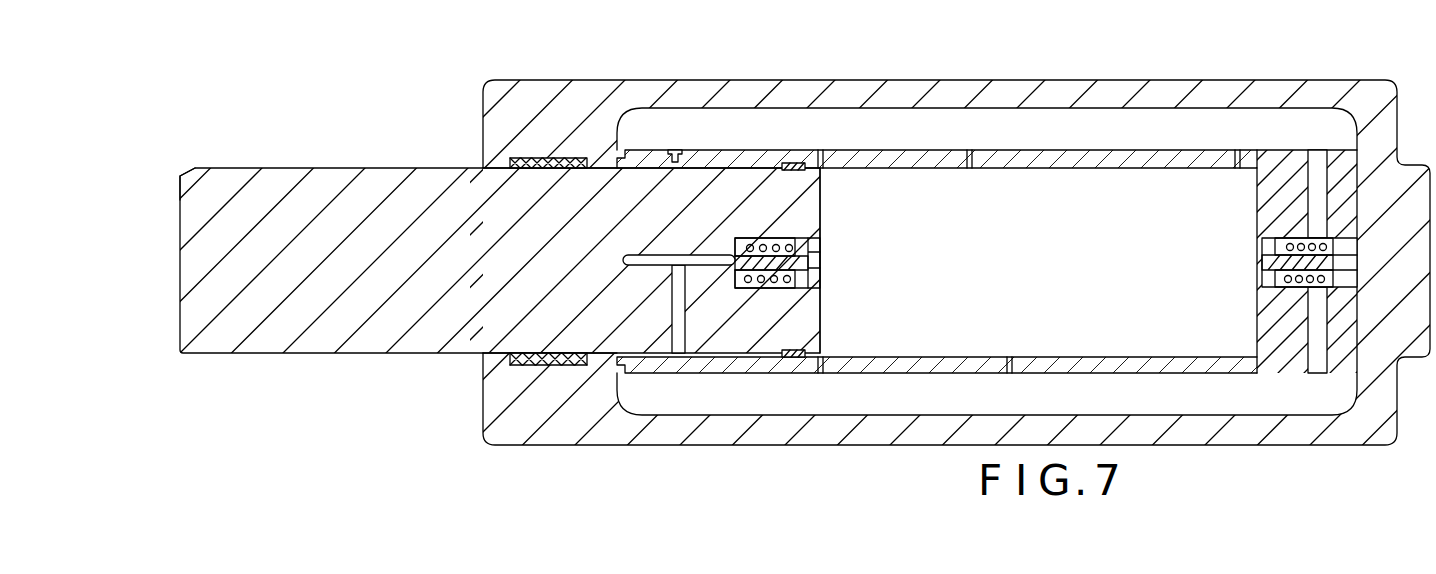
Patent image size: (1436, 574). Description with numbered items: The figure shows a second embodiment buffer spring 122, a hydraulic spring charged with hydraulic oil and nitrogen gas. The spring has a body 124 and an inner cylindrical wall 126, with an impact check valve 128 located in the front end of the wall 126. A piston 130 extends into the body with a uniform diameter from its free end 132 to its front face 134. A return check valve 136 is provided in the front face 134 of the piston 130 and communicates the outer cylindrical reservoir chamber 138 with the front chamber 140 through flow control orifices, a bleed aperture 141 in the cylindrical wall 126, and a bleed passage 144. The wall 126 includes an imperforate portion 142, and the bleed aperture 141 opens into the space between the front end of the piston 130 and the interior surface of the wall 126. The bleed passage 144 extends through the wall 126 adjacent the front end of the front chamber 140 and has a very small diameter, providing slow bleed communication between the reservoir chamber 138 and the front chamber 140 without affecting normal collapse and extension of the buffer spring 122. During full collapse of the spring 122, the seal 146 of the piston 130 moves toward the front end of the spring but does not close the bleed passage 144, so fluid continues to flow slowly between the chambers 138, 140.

The buffer spring 122 is at (462, 82).
The body 124 is at (520, 445).
The inner cylindrical wall 126 is at (925, 150).
The impact check valve 128 is at (1272, 277).
The piston 130 is at (283, 330).
The free end 132 is at (180, 190).
The front face 134 is at (820, 225).
The return check valve 136 is at (483, 372).
The outer cylindrical reservoir chamber 138 is at (865, 393).
The front chamber 140 is at (1032, 288).
The bleed aperture 141 is at (675, 150).
The imperforate portion 142 is at (1080, 168).
The bleed passage 144 is at (1235, 168).
The seal 146 is at (790, 357).